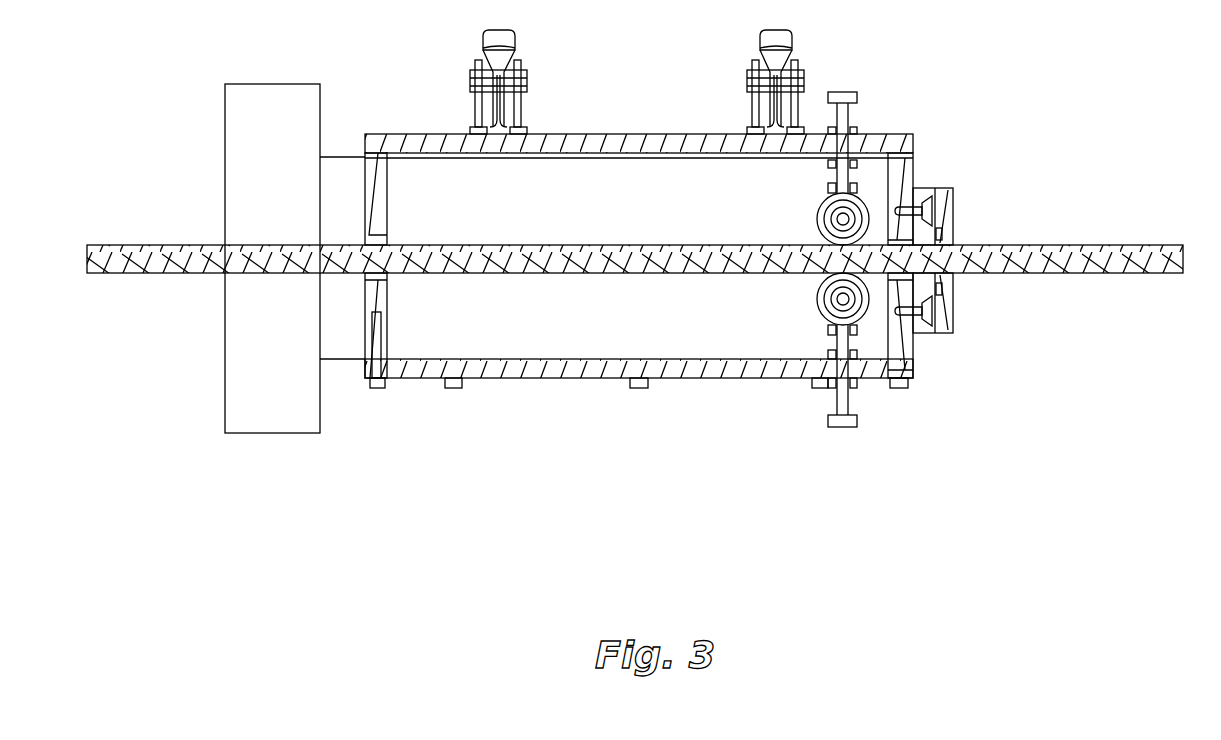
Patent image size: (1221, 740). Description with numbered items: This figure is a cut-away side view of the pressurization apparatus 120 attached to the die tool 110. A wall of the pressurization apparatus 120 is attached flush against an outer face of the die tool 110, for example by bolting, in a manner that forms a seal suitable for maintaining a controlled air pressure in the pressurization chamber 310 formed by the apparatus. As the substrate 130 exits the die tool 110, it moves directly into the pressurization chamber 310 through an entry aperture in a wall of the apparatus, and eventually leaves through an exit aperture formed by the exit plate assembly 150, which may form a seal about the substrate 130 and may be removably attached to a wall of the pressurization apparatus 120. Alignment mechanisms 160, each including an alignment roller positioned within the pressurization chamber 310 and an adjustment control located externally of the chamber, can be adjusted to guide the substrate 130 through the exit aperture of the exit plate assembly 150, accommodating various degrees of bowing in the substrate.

The die tool 110 is at (362, 443).
The pressurization apparatus 120 is at (646, 290).
The substrate 130 is at (1050, 243).
The exit plate assembly 150 is at (935, 190).
The alignment mechanism 160 is at (838, 92).
The pressurization chamber 310 is at (540, 185).